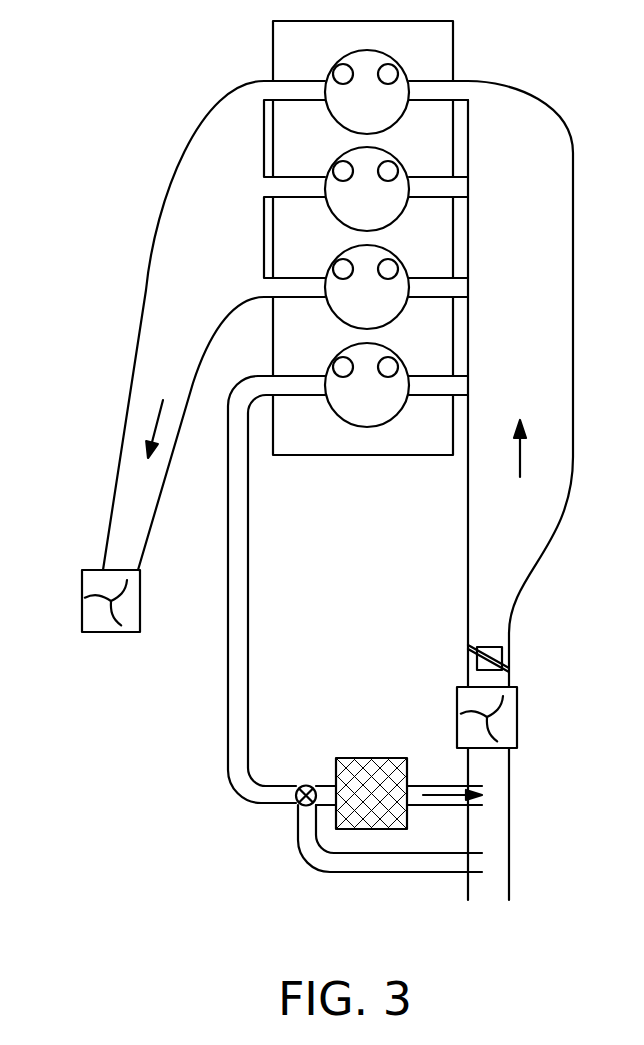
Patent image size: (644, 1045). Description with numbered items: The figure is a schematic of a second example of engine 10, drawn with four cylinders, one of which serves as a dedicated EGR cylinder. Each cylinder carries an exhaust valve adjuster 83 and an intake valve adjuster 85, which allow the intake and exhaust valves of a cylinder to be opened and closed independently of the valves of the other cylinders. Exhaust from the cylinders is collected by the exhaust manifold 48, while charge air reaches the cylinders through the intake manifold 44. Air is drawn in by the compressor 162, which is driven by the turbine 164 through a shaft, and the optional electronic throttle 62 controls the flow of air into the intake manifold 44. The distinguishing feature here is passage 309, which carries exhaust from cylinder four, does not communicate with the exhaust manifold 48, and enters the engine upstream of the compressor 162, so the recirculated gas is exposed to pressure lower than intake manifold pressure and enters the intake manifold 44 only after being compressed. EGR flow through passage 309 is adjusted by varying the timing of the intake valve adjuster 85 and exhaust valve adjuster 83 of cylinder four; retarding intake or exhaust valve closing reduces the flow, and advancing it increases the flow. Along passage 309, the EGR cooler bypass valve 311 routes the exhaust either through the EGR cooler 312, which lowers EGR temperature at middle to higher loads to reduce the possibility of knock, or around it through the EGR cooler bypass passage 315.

The engine 10 is at (273, 41).
The exhaust valve adjuster 83 is at (334, 68).
The intake valve adjuster 85 is at (400, 68).
The exhaust manifold 48 is at (184, 280).
The intake manifold 44 is at (499, 340).
The electronic throttle 62 is at (502, 652).
The compressor 162 is at (463, 687).
The turbine 164 is at (87, 570).
The passage 309 is at (230, 770).
The EGR cooler bypass valve 311 is at (300, 806).
The EGR cooler 312 is at (384, 758).
The EGR cooler bypass passage 315 is at (362, 872).